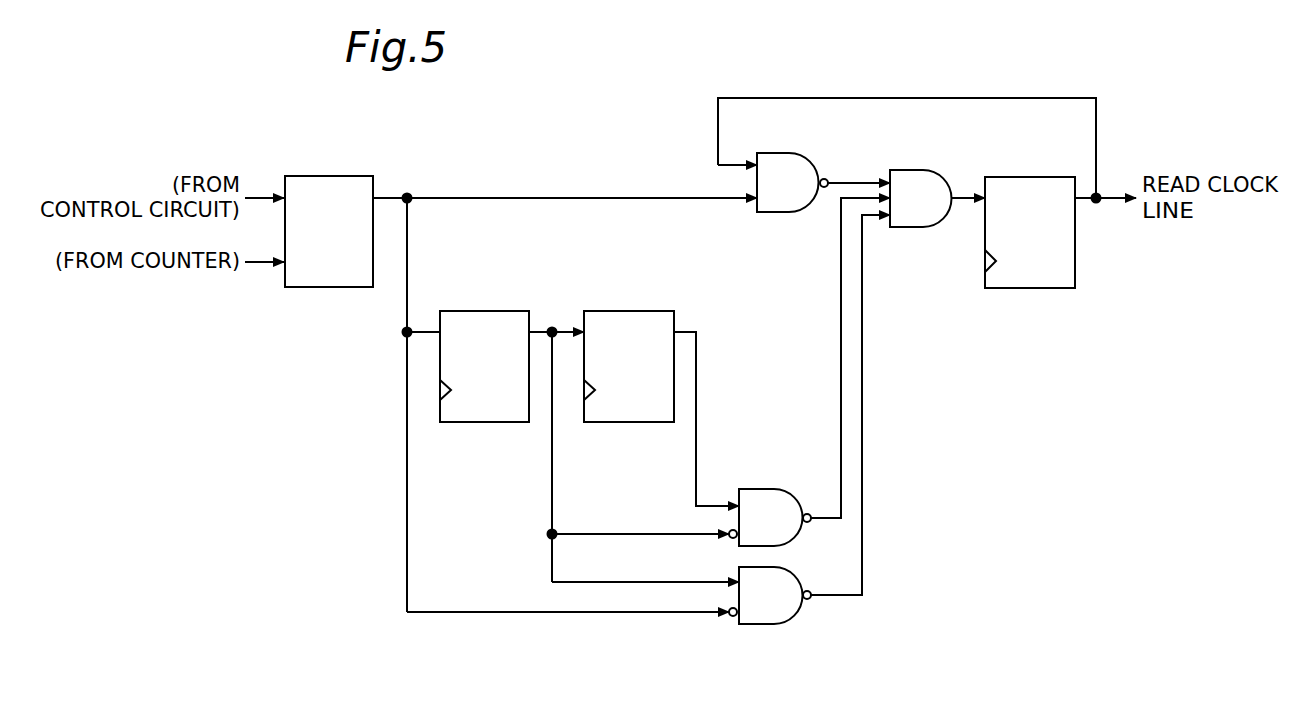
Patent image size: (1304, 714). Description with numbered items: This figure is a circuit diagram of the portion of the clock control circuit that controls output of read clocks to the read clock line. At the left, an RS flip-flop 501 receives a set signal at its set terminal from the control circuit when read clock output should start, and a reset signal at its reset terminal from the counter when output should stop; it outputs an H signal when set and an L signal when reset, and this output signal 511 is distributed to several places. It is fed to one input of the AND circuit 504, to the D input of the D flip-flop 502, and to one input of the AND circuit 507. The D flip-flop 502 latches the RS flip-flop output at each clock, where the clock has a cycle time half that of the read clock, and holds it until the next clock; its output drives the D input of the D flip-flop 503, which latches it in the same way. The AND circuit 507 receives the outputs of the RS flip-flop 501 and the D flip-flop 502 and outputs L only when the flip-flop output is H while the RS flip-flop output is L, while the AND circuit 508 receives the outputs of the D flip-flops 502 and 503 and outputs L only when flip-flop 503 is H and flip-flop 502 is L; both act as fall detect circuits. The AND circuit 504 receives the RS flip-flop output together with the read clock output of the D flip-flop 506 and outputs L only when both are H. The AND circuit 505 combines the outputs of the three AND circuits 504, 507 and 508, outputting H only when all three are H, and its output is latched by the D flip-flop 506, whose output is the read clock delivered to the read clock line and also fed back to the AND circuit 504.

The RS flip-flop 501 is at (341, 176).
The D flip-flop 502 is at (505, 311).
The D flip-flop 503 is at (645, 311).
The AND circuit 504 is at (780, 153).
The AND circuit 505 is at (913, 170).
The D flip-flop 506 is at (1040, 177).
The AND circuit (fall detect circuit) 507 is at (797, 617).
The AND circuit (fall detect circuit) 508 is at (792, 490).
The output signal of the RS flip-flop 511 is at (390, 197).